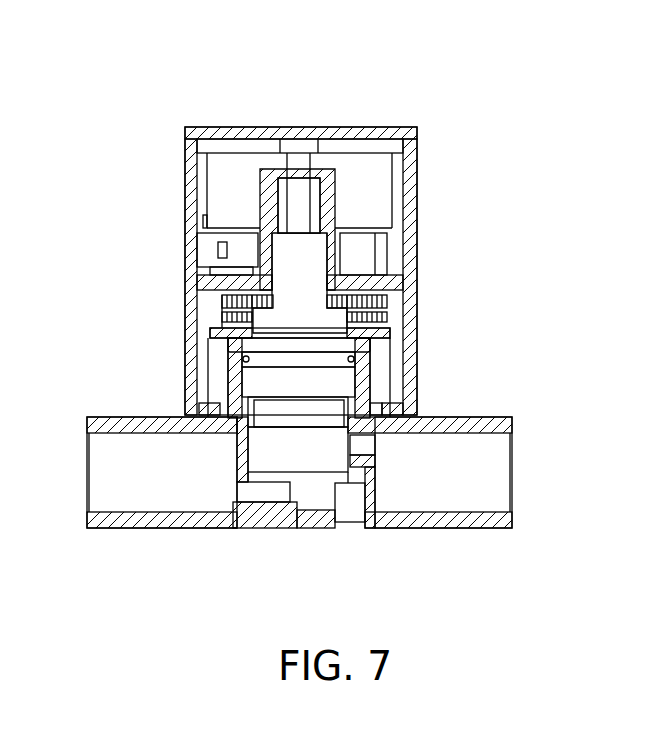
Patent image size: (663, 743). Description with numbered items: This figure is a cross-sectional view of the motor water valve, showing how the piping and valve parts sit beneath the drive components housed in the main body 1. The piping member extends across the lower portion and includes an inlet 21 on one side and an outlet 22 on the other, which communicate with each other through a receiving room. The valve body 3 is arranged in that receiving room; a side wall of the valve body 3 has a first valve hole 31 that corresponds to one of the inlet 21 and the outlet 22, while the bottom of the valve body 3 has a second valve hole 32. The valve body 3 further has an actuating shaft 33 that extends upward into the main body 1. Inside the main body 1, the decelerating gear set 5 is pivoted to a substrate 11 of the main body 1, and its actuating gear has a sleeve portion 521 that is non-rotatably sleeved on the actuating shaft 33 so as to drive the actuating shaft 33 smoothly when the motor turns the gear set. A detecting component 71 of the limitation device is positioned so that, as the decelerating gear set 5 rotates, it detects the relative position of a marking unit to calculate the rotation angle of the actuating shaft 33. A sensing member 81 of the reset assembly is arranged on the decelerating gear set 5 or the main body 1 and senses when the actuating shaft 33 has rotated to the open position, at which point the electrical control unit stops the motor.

The main body 1 is at (235, 133).
The sleeve portion 521 is at (270, 175).
The actuating shaft 33 is at (310, 198).
The sensing member 81 is at (218, 248).
The detecting component 71 is at (208, 251).
The substrate 11 is at (213, 337).
The decelerating gear set 5 is at (393, 310).
The inlet 21 is at (102, 445).
The outlet 22 is at (495, 462).
The valve body 3 is at (312, 478).
The second valve hole 32 is at (283, 462).
The first valve hole 31 is at (343, 467).